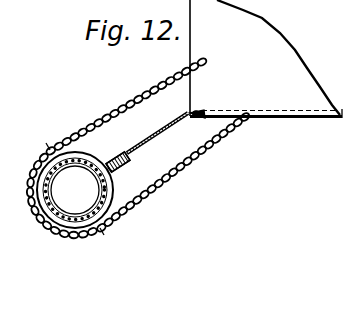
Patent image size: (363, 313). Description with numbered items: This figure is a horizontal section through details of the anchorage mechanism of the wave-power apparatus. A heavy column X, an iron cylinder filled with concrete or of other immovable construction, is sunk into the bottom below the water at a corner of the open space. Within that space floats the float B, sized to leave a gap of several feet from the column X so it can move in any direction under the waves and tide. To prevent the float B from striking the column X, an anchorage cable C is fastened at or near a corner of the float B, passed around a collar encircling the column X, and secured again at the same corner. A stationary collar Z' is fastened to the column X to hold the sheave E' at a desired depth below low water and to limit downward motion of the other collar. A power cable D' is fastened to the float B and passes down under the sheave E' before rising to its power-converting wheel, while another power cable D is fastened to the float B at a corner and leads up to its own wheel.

The float B is at (266, 59).
The anchorage cable C is at (114, 112).
The power cable D is at (213, 102).
The power cable D' is at (157, 133).
The sheave E' is at (131, 163).
The column X is at (75, 190).
The stationary collar Z' is at (75, 206).